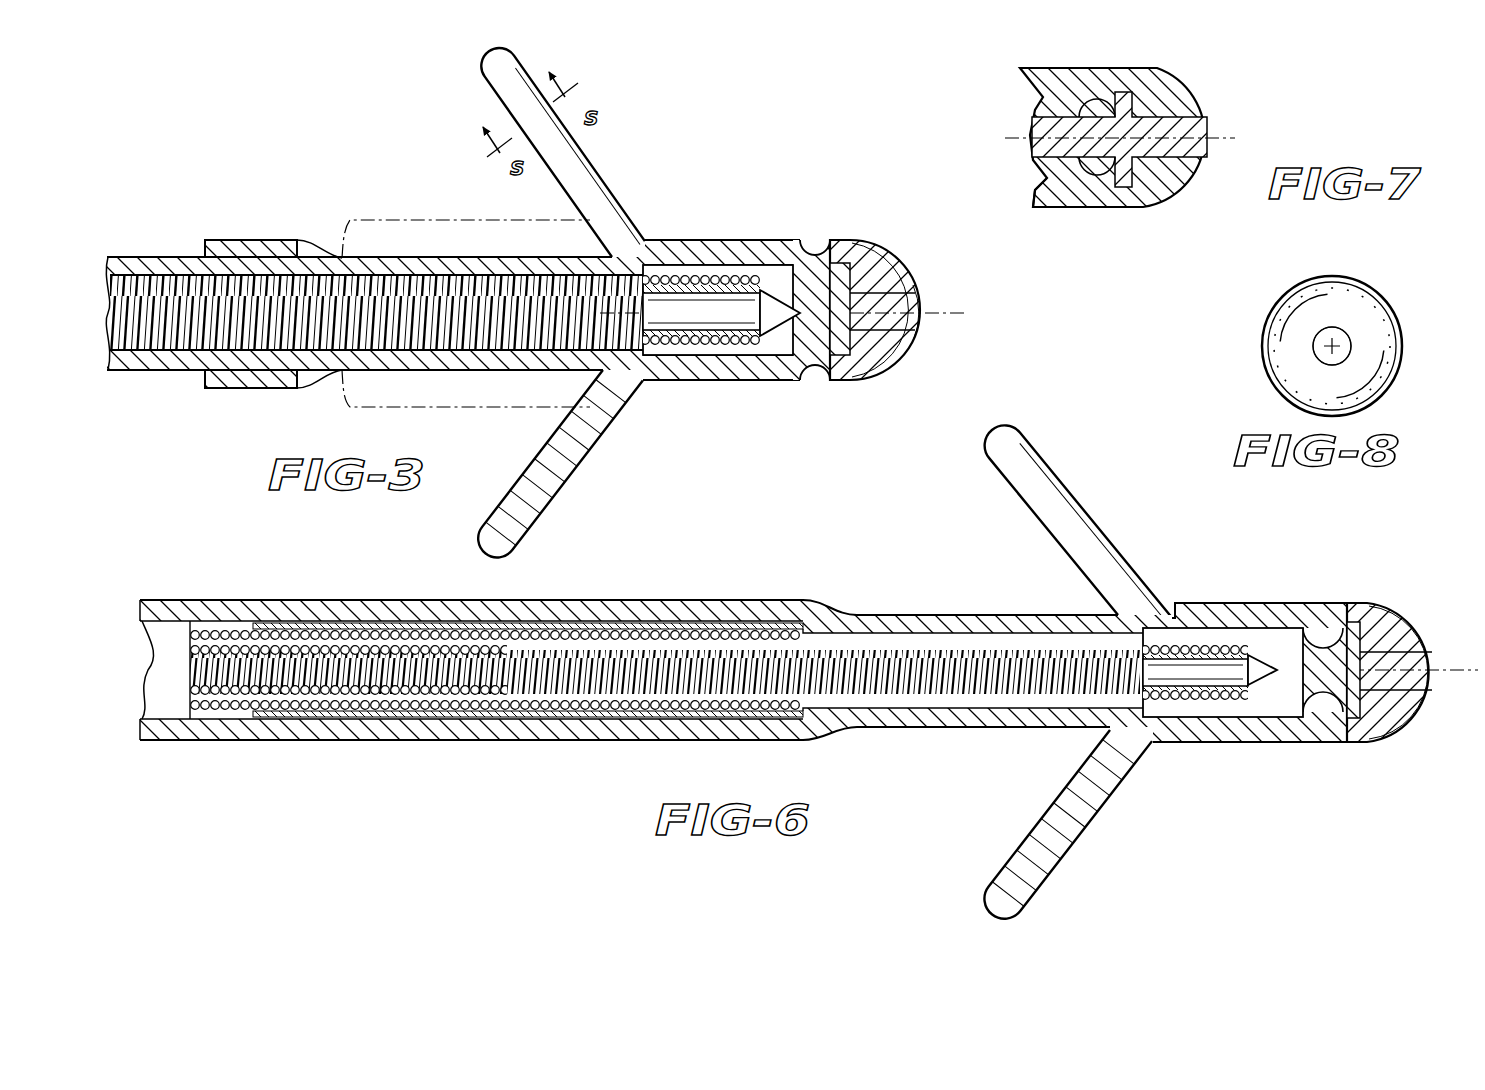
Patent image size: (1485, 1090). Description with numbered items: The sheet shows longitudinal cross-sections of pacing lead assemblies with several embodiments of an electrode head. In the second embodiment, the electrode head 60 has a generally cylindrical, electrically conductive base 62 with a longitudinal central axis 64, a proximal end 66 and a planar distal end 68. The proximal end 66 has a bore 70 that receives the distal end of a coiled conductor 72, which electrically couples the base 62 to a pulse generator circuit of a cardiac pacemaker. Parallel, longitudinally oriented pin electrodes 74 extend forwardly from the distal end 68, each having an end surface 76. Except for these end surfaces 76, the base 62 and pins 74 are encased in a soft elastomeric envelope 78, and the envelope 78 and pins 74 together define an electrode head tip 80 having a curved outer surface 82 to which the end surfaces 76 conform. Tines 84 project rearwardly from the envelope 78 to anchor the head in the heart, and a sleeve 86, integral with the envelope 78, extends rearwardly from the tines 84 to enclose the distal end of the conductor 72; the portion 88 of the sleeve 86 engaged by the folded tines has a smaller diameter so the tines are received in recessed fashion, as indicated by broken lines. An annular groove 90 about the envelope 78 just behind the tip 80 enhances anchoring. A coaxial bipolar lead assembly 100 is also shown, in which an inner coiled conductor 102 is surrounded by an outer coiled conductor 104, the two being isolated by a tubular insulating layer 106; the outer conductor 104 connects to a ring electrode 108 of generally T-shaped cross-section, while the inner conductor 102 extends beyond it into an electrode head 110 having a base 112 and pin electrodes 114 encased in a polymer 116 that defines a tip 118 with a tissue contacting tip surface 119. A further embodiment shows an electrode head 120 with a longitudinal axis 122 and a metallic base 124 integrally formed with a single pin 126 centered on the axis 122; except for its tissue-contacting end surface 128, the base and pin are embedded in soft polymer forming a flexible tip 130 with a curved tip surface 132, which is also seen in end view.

In FIG. 3, the electrode head 60 is at (727, 190).
In FIG. 3, the base 62 is at (760, 292).
In FIG. 3, the longitudinal central axis 64 is at (930, 318).
In FIG. 3, the proximal end 66 is at (762, 358).
In FIG. 3, the distal end 68 is at (845, 345).
In FIG. 3, the bore 70 is at (700, 276).
In FIG. 3, the coiled conductor 72 is at (325, 270).
In FIG. 3, the pin electrodes 74 is at (878, 252).
In FIG. 3, the end surface 76 is at (912, 270).
In FIG. 3, the elastomeric envelope 78 is at (657, 380).
In FIG. 3, the electrode head tip 80 is at (828, 248).
In FIG. 3, the curved outer surface 82 is at (922, 305).
In FIG. 3, the tines 84 is at (597, 445).
In FIG. 3, the sleeve 86 is at (238, 388).
In FIG. 3, the portion of the sleeve 88 is at (458, 368).
In FIG. 3, the annular groove 90 is at (818, 368).
In FIG. 6, the coaxial bipolar lead assembly 100 is at (833, 578).
In FIG. 6, the inner coiled conductor 102 is at (885, 648).
In FIG. 6, the outer coiled conductor 104 is at (410, 632).
In FIG. 6, the tubular insulating layer 106 is at (682, 635).
In FIG. 6, the ring electrode 108 is at (400, 741).
In FIG. 6, the electrode head 110 is at (1203, 624).
In FIG. 6, the base 112 is at (1263, 628).
In FIG. 6, the pin electrodes 114 is at (1373, 622).
In FIG. 6, the polymer 116 is at (1260, 733).
In FIG. 6, the tip 118 is at (1388, 612).
In FIG. 6, the tissue contacting tip surface 119 is at (1442, 652).
In FIG. 7, the electrode head 120 is at (1045, 58).
In FIG. 7, the longitudinal axis 122 is at (1217, 138).
In FIG. 7, the metallic base 124 is at (1060, 178).
In FIG. 7, the pin 126 is at (1165, 95).
In FIG. 8, the pin 126 is at (1345, 358).
In FIG. 7, the tissue-contacting end surface 128 is at (1200, 140).
In FIG. 8, the tissue-contacting end surface 128 is at (1345, 330).
In FIG. 8, the flexible tip 130 is at (1262, 340).
In FIG. 7, the curved tip surface 132 is at (1182, 172).